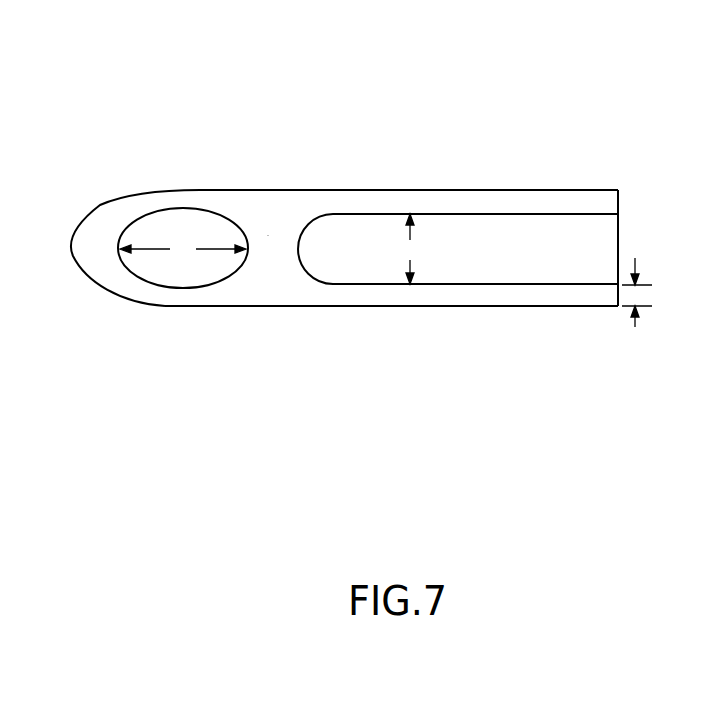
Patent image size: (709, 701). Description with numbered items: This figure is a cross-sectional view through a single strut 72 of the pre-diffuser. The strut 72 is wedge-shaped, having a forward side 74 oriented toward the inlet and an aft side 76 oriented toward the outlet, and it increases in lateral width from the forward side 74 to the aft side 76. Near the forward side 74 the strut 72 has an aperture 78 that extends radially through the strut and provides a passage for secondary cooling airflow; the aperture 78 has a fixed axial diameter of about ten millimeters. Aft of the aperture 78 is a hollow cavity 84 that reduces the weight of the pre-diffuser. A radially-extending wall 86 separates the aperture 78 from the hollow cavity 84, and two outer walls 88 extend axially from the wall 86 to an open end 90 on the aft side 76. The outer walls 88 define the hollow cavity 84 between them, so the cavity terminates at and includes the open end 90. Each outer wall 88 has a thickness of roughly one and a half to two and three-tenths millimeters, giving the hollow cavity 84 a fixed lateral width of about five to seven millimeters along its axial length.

The strut 72 is at (465, 53).
The forward side 74 is at (72, 243).
The aft side 76 is at (620, 200).
The aperture 78 is at (173, 222).
The hollow cavity 84 is at (482, 240).
The radially-extending wall 86 is at (270, 244).
The outer walls 88 is at (422, 202).
The open end 90 is at (620, 248).